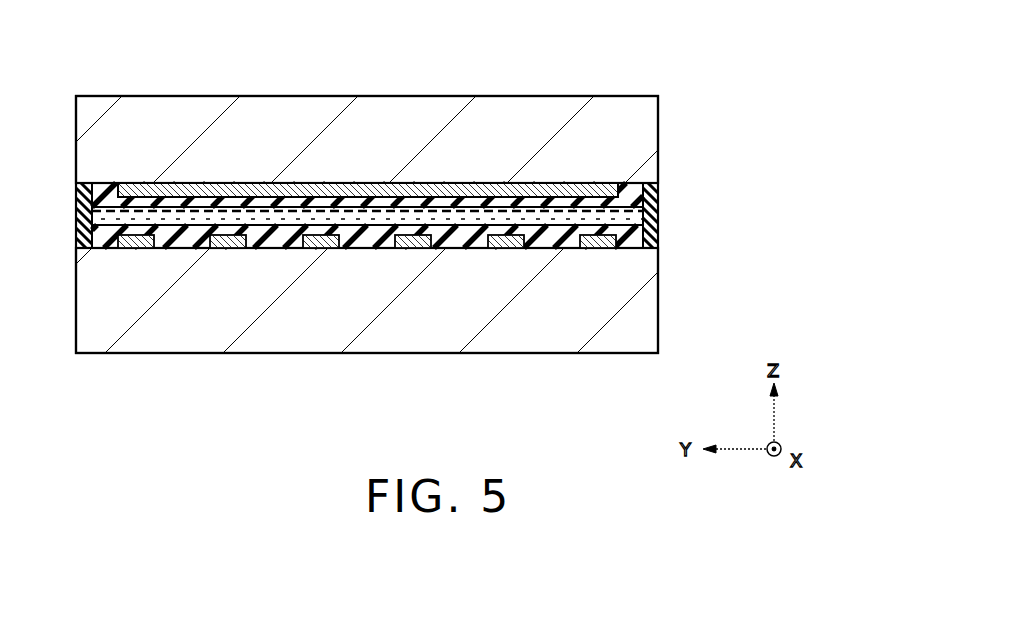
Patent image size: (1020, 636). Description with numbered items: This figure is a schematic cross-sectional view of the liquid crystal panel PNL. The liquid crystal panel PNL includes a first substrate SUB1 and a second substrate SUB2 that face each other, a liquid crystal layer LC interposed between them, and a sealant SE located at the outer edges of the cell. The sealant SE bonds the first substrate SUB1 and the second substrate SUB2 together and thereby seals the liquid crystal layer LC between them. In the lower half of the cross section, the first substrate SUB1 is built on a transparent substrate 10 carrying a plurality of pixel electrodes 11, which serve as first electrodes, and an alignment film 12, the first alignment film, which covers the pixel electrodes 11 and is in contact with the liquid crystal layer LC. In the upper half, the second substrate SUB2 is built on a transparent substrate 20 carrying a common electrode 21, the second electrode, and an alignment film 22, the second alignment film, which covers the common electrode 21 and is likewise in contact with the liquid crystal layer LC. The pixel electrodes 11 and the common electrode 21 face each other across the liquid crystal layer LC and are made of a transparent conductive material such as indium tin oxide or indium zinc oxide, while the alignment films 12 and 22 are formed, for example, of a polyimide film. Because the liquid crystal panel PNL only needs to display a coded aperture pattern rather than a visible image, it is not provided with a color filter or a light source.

The transparent substrate 10 is at (424, 328).
The pixel electrode 11 is at (136, 240).
The alignment film 12 is at (190, 240).
The transparent substrate 20 is at (424, 115).
The common electrode 21 is at (477, 192).
The alignment film 22 is at (528, 202).
The liquid crystal panel PNL is at (394, 213).
The first substrate SUB1 is at (660, 300).
The second substrate SUB2 is at (660, 137).
The liquid crystal layer LC is at (655, 209).
The sealant SE is at (76, 217).